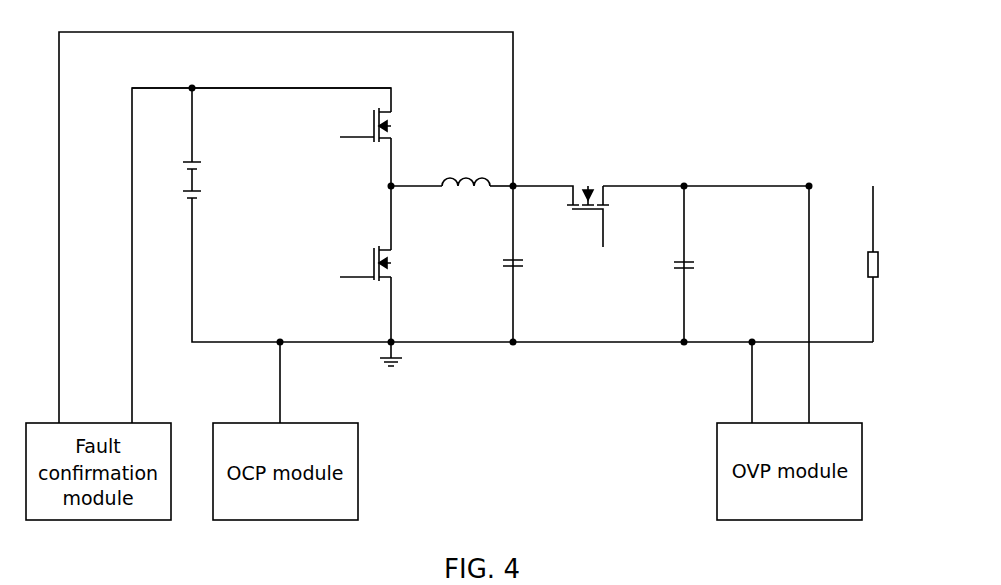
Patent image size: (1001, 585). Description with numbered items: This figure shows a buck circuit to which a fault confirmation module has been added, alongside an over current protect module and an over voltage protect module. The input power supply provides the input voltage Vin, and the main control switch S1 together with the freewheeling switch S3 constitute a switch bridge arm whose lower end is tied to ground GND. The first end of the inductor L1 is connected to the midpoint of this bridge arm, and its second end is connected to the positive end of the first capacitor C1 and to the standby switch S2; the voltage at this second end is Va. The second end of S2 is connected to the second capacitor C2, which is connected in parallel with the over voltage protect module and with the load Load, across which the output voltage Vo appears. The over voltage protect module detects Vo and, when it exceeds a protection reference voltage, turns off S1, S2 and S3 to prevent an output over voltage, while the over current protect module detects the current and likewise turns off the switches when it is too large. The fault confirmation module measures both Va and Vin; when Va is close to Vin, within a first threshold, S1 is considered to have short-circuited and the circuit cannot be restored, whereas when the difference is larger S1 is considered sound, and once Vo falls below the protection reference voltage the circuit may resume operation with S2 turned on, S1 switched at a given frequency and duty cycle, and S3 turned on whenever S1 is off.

The input voltage Vin is at (192, 88).
The first switch component S1 is at (363, 123).
The third switch component S3 is at (359, 263).
The inductor L1 is at (452, 167).
The voltage at second end of inductor Va is at (513, 186).
The second switch component S2 is at (561, 216).
The second capacitor C2 is at (496, 262).
The first capacitor C1 is at (667, 264).
The output voltage Vo is at (809, 186).
The load Load is at (902, 264).
The ground GND is at (390, 372).